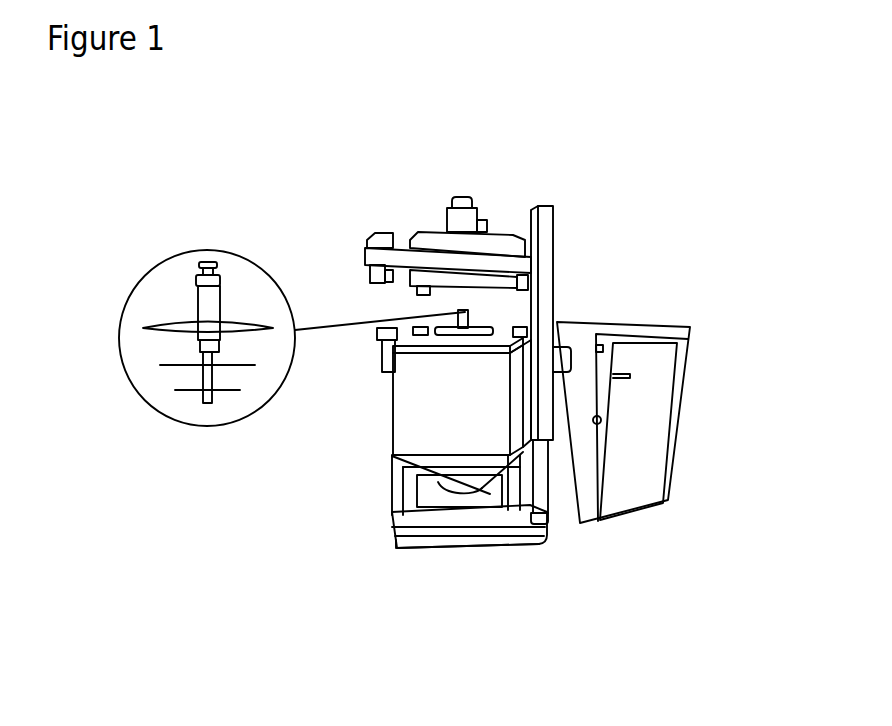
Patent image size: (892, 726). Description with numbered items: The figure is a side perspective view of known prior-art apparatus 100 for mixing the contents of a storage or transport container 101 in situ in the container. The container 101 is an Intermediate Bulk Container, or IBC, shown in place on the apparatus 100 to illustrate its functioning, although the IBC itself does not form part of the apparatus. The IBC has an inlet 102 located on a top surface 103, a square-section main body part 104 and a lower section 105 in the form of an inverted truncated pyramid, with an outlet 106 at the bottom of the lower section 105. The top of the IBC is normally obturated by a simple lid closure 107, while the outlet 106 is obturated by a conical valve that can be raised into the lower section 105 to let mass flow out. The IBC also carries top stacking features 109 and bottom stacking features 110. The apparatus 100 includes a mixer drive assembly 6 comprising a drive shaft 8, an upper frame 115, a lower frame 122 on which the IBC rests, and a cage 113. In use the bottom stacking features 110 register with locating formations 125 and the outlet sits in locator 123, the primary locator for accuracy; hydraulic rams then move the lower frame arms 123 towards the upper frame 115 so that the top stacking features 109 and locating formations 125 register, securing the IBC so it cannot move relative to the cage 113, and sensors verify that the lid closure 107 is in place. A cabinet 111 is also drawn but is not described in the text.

The apparatus 100 is at (666, 124).
The mixer drive assembly 6 is at (462, 197).
The drive shaft 8 is at (455, 227).
The upper frame 115 is at (494, 268).
The locating formations 125 is at (365, 270).
The cage 113 is at (547, 263).
The inlet 102 is at (483, 318).
The control cabinet 111 is at (655, 377).
The top stacking features 109 is at (380, 335).
The lid closure 107 is at (447, 330).
The container 101 is at (432, 432).
The bottom stacking features 110 is at (432, 483).
The lower section 105 is at (470, 482).
The outlet 106 is at (413, 523).
The main body part 104 is at (547, 518).
The lower frame 122 is at (510, 527).
The locator 123 is at (450, 537).
The top surface 103 is at (513, 345).